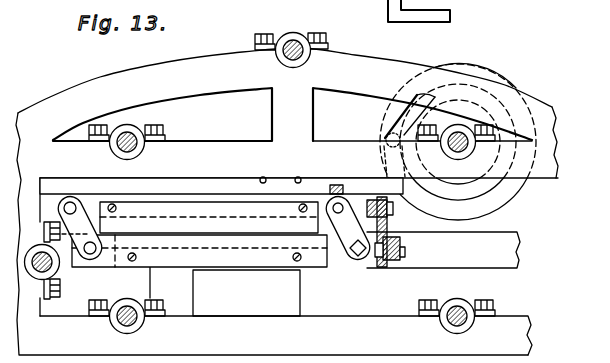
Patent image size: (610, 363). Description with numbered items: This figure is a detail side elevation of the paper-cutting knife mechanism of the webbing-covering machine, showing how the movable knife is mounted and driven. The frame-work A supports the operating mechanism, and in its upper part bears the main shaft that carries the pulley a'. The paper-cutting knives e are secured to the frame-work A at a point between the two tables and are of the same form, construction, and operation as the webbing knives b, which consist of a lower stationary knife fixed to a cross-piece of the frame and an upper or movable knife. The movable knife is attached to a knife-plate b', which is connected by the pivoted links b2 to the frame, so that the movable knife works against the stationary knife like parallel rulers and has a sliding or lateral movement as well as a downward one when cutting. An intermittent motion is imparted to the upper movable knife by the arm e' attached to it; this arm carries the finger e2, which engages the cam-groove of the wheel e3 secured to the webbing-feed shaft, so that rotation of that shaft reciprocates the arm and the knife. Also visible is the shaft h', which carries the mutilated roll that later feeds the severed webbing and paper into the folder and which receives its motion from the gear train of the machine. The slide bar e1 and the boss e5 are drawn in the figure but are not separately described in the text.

The frame-work A is at (292, 114).
The pulley a' is at (291, 40).
The shaft h' is at (127, 119).
The knife-plate b' is at (221, 176).
The pivoted links b2 is at (77, 196).
The knives b is at (394, 232).
The paper-cutting knives e is at (199, 251).
The slide bar e1 is at (209, 218).
The arm e' is at (336, 177).
The finger e2 is at (384, 138).
The cam-wheel e3 is at (489, 70).
The wheel boss e5 is at (453, 153).